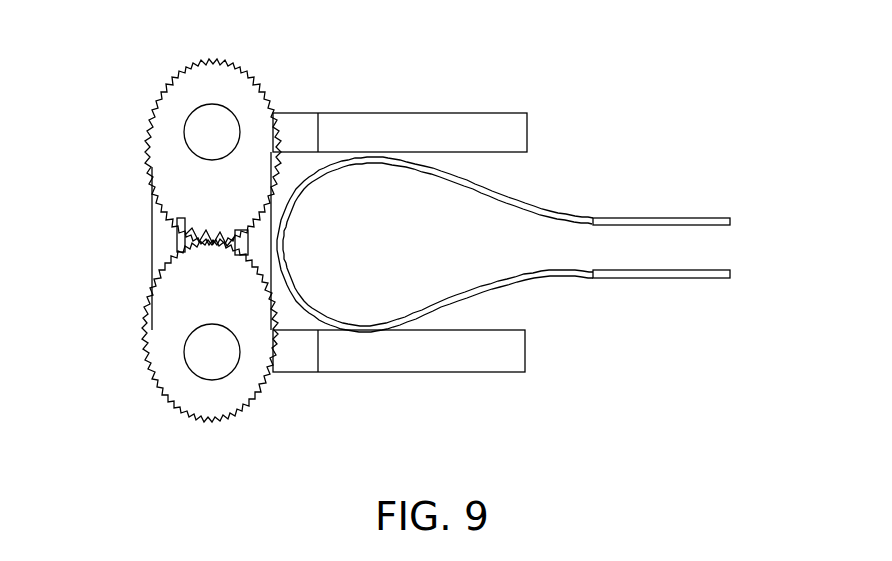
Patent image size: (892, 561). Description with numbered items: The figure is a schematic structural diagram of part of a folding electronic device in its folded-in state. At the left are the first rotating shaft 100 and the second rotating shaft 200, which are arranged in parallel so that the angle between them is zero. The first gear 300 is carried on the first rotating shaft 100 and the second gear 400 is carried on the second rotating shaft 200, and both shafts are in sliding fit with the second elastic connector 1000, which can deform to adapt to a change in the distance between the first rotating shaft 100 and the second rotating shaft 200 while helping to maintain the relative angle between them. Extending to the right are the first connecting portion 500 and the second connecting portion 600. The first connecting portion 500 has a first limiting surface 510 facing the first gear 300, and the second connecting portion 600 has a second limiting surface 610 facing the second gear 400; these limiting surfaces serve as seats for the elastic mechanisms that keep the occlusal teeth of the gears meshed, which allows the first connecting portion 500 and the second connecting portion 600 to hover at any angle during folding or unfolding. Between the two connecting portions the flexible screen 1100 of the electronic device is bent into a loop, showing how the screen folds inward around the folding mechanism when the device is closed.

The first rotating shaft 100 is at (220, 135).
The second rotating shaft 200 is at (215, 348).
The first gear 300 is at (226, 85).
The second gear 400 is at (213, 397).
The first connecting portion 500 is at (428, 130).
The first limiting surface 510 is at (303, 133).
The second connecting portion 600 is at (422, 345).
The second limiting surface 610 is at (300, 345).
The second elastic connector 1000 is at (175, 246).
The flexible screen 1100 is at (683, 222).